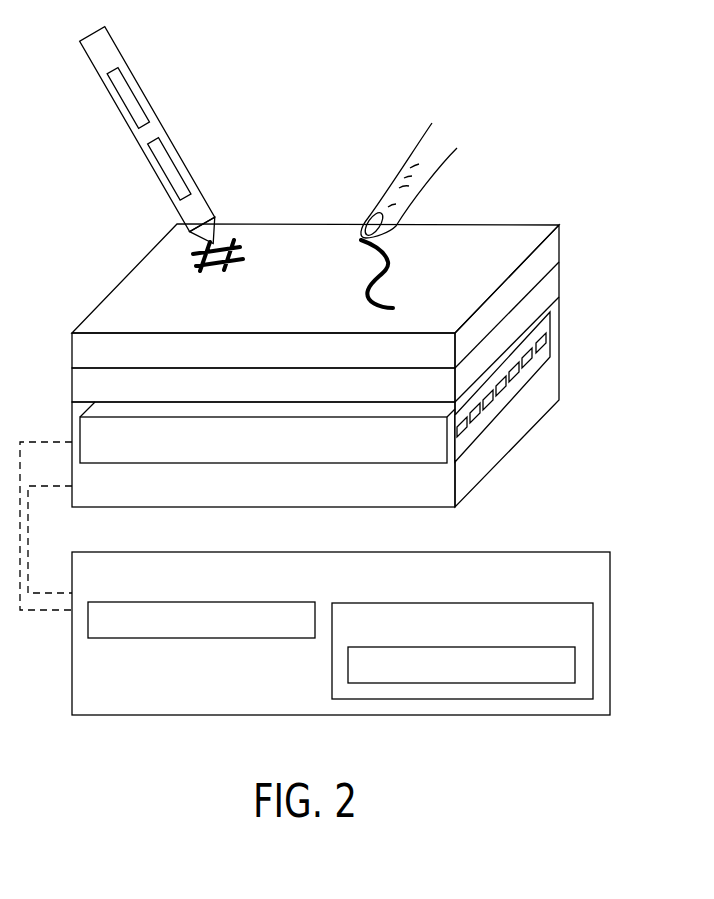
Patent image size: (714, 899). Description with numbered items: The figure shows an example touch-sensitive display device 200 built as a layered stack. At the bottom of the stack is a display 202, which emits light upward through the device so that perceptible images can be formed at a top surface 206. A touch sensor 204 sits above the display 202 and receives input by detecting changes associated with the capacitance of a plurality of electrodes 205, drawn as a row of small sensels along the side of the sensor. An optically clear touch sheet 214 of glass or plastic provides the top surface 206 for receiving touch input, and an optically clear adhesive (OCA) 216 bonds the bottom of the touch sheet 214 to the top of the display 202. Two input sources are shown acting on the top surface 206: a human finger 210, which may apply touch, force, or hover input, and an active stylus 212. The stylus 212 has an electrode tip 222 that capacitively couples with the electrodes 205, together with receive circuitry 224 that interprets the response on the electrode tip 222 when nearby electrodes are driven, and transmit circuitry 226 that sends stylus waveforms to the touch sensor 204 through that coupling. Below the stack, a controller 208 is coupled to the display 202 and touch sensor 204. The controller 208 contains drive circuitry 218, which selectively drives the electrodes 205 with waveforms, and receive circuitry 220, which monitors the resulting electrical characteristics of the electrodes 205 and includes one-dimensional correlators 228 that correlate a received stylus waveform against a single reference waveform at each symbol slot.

The touch-sensitive display device 200 is at (323, 50).
The display 202 is at (321, 497).
The touch sensor 204 is at (357, 451).
The electrodes 205 is at (567, 332).
The top surface 206 is at (526, 236).
The controller 208 is at (424, 584).
The human finger 210 is at (415, 138).
The active stylus 212 is at (96, 28).
The optically clear touch sheet 214 is at (352, 361).
The optically clear adhesive (OCA) 216 is at (313, 396).
The drive circuitry 218 is at (303, 632).
The receive circuitry 220 is at (577, 635).
The electrode tip 222 is at (214, 231).
The receive circuitry 224 is at (172, 157).
The transmit circuitry 226 is at (130, 86).
The one-dimensional correlators 228 is at (560, 676).